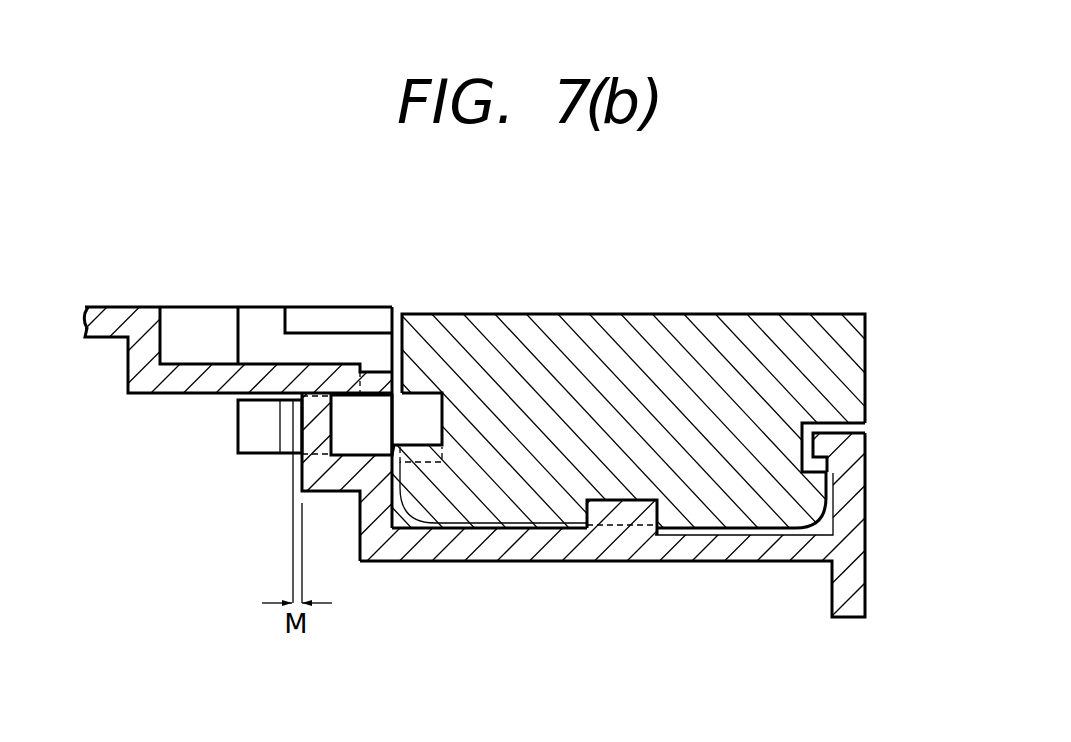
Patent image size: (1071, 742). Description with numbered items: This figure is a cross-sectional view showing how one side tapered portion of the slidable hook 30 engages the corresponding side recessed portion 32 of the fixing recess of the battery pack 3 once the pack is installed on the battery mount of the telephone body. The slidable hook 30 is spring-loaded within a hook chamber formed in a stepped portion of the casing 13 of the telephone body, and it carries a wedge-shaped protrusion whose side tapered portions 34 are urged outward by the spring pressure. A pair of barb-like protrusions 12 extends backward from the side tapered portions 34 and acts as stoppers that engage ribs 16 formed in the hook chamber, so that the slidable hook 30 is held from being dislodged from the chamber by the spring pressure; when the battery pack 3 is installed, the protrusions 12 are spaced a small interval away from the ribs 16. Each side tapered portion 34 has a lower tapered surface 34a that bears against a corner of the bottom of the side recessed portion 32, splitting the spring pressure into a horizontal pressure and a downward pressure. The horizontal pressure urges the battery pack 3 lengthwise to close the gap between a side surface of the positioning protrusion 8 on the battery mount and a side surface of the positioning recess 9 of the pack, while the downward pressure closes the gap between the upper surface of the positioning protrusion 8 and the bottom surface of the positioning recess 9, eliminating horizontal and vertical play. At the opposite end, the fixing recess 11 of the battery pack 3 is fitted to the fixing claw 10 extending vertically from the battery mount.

The battery pack 3 is at (607, 323).
The positioning protrusion 8 is at (619, 512).
The positioning recess 9 is at (613, 498).
The fixing claw 10 is at (828, 446).
The fixing recess 11 is at (825, 421).
The barb-like protrusions 12 is at (250, 427).
The casing 13 is at (140, 358).
The ribs 16 is at (343, 532).
The slidable hook 30 is at (262, 323).
The side recessed portions 32 is at (388, 433).
The side tapered portions 34 is at (416, 415).
The lower tapered surface 34a is at (433, 530).